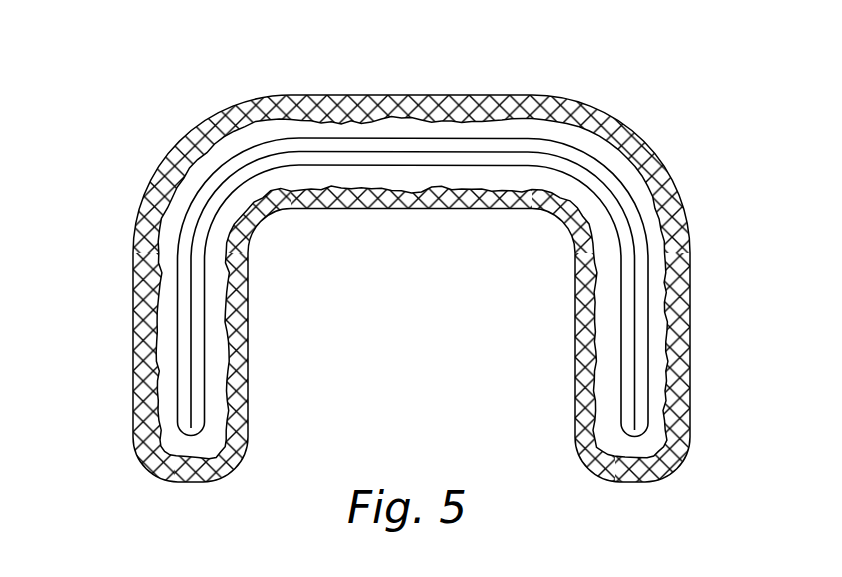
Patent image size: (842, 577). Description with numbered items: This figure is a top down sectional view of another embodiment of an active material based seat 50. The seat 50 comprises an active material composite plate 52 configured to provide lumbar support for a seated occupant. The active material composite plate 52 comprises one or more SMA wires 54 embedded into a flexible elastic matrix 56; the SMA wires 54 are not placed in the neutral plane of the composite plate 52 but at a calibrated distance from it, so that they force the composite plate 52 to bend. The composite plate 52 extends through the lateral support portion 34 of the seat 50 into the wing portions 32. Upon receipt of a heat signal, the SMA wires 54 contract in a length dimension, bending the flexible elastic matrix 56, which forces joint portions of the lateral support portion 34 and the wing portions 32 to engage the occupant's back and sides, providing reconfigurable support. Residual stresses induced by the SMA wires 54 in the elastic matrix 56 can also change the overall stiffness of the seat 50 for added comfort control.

The active material based seat 50 is at (119, 150).
The wing portions 32 is at (681, 307).
The lateral support portion 34 is at (453, 102).
The active material composite plate 52 is at (352, 132).
The SMA wires 54 is at (637, 238).
The flexible elastic matrix 56 is at (560, 143).